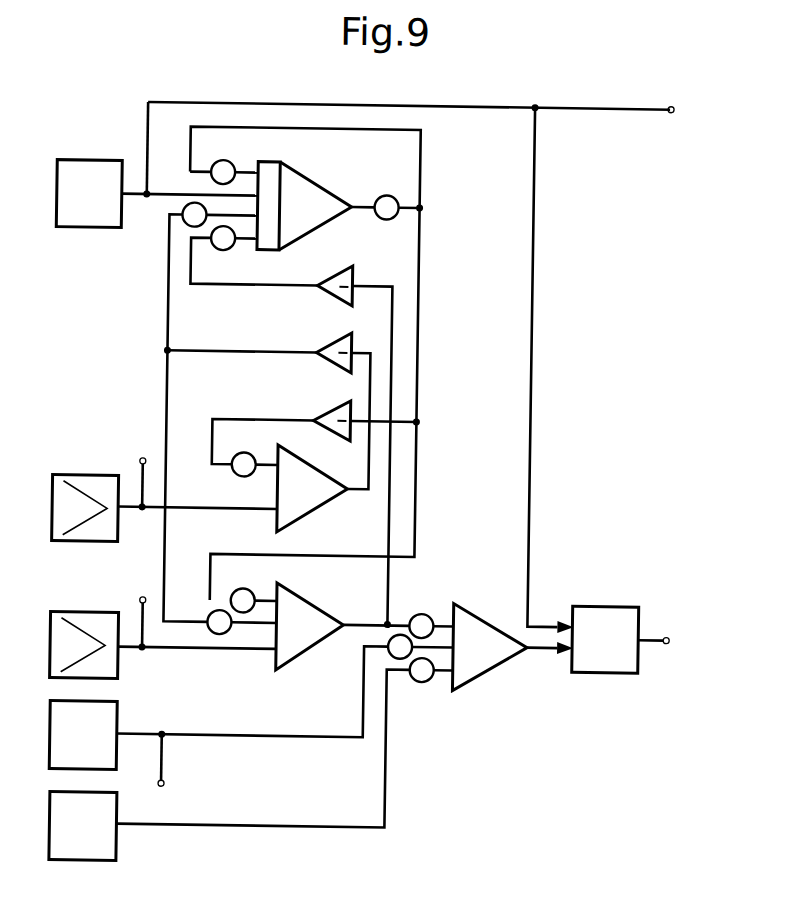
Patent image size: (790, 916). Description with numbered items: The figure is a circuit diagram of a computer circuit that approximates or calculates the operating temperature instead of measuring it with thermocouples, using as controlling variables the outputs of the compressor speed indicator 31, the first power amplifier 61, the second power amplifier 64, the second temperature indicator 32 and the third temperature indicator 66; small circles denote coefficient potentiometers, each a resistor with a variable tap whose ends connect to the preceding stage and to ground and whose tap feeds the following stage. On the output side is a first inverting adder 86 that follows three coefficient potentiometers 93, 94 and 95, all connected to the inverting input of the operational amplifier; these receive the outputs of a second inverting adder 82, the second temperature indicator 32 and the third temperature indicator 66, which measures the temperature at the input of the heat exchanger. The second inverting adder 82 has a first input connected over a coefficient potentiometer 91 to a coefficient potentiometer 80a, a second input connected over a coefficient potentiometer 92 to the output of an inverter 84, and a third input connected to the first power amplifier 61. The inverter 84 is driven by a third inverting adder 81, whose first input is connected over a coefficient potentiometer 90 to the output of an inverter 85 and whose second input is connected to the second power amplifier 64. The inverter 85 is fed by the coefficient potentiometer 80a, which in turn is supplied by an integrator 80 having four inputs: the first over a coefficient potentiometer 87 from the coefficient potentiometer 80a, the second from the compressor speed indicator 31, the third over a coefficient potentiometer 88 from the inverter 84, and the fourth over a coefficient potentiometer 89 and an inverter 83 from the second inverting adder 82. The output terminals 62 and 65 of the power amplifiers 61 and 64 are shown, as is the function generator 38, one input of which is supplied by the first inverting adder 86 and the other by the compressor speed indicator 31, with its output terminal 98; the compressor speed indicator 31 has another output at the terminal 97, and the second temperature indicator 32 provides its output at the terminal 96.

The compressor speed indicator 31 is at (82, 174).
The coefficient potentiometer 87 is at (219, 162).
The coefficient potentiometer 88 is at (179, 216).
The coefficient potentiometer 89 is at (220, 252).
The integrator 80 is at (301, 191).
The coefficient potentiometer 80a is at (382, 195).
The inverter 83 is at (348, 272).
The inverter 84 is at (344, 343).
The inverter 85 is at (344, 406).
The terminal 97 is at (666, 108).
The second power amplifier 64 is at (88, 484).
The output terminal 65 is at (143, 461).
The coefficient potentiometer 90 is at (243, 478).
The third inverting adder 81 is at (305, 501).
The coefficient potentiometer 91 is at (242, 591).
The coefficient potentiometer 92 is at (211, 615).
The second inverting adder 82 is at (312, 612).
The first power amplifier 61 is at (76, 616).
The output terminal 62 is at (145, 600).
The coefficient potentiometer 93 is at (424, 613).
The coefficient potentiometer 94 is at (390, 644).
The coefficient potentiometer 95 is at (424, 681).
The first inverting adder 86 is at (486, 660).
The function generator 38 is at (594, 606).
The output terminal 98 is at (669, 639).
The second temperature indicator 32 is at (110, 716).
The terminal 96 is at (169, 787).
The third temperature indicator 66 is at (89, 863).